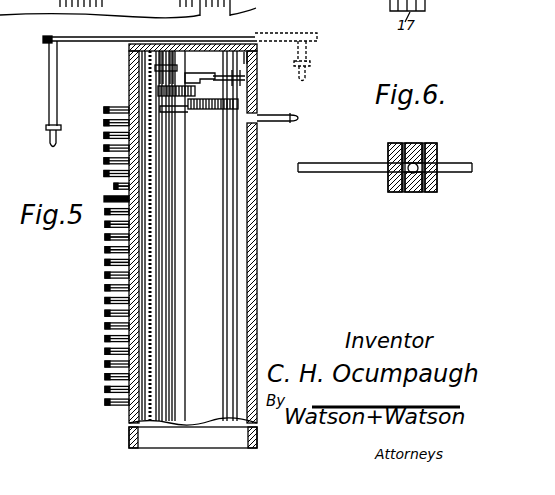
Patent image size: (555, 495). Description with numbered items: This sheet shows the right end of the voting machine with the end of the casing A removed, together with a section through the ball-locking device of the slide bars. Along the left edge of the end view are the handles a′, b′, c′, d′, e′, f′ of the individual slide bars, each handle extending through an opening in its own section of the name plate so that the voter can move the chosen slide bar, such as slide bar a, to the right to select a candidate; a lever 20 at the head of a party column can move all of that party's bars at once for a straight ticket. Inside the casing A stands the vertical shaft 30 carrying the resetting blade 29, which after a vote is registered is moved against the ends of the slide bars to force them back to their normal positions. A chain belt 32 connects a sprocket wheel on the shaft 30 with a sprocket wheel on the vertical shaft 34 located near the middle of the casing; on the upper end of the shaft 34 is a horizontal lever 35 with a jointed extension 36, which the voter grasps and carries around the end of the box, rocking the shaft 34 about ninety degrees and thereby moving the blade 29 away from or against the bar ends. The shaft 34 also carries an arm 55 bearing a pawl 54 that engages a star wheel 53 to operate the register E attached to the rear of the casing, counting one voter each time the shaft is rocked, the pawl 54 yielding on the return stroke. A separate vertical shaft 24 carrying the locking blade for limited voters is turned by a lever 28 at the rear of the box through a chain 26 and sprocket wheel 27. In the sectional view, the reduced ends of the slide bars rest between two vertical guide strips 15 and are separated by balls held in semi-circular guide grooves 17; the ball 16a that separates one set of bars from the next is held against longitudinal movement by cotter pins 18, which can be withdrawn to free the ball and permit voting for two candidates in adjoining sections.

In FIG. 5, the casing A is at (262, 258).
In FIG. 5, the vertical guide strips 15 is at (157, 288).
In FIG. 6, the vertical guide strips 15 is at (388, 153).
In FIG. 5, the vertical shaft 30 is at (165, 365).
In FIG. 5, the resetting blade 29 is at (185, 217).
In FIG. 5, the chain 26 is at (217, 236).
In FIG. 5, the lever 20 is at (103, 147).
In FIG. 5, the handle a′ is at (114, 186).
In FIG. 5, the handle b′ is at (105, 214).
In FIG. 5, the handle c′ is at (105, 227).
In FIG. 5, the handle d′ is at (105, 240).
In FIG. 5, the handle e′ is at (105, 252).
In FIG. 5, the handle f′ is at (105, 265).
In FIG. 5, the horizontal lever 35 is at (90, 41).
In FIG. 5, the jointed extension 36 is at (44, 94).
In FIG. 5, the pawl 54 is at (187, 80).
In FIG. 5, the vertical shaft 34 is at (182, 57).
In FIG. 5, the vertical shaft 24 is at (155, 68).
In FIG. 5, the chain belt 32 is at (158, 90).
In FIG. 5, the sprocket wheel 27 is at (243, 104).
In FIG. 5, the arm 55 is at (198, 72).
In FIG. 5, the star wheel 53 is at (257, 72).
In FIG. 5, the register E is at (250, 56).
In FIG. 5, the lever 28 is at (299, 118).
In FIG. 6, the slide bar a is at (343, 184).
In FIG. 6, the semi-circular guide grooves 17 is at (410, 190).
In FIG. 6, the cotter pins 18 is at (422, 147).
In FIG. 6, the ball 16a is at (395, 182).